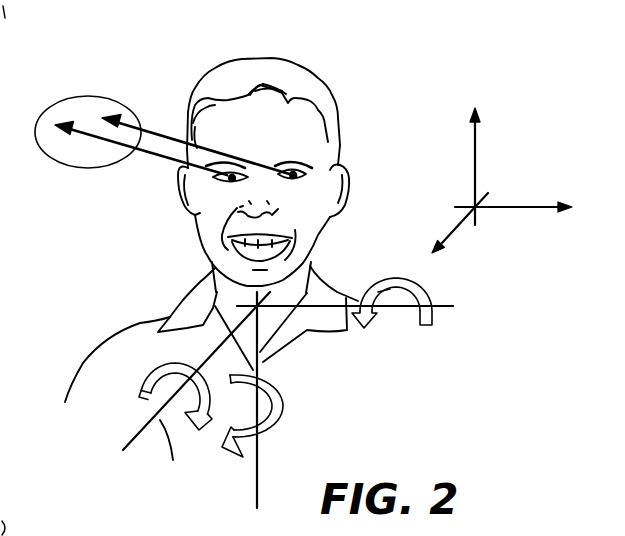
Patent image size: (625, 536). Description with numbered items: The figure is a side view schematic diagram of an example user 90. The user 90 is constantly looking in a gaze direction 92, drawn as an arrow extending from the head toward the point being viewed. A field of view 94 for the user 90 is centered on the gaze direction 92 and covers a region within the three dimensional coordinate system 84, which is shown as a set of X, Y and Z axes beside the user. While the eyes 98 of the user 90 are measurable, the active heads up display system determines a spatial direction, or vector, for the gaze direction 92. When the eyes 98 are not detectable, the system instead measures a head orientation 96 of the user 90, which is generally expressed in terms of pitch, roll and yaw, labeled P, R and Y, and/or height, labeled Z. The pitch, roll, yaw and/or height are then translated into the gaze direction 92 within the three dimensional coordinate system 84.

The user 90 is at (287, 60).
The gaze direction 92 is at (157, 158).
The field of view 94 is at (120, 100).
The eyes 98 is at (304, 175).
The three dimensional coordinate system 84 is at (515, 207).
The head orientation 96 is at (157, 415).